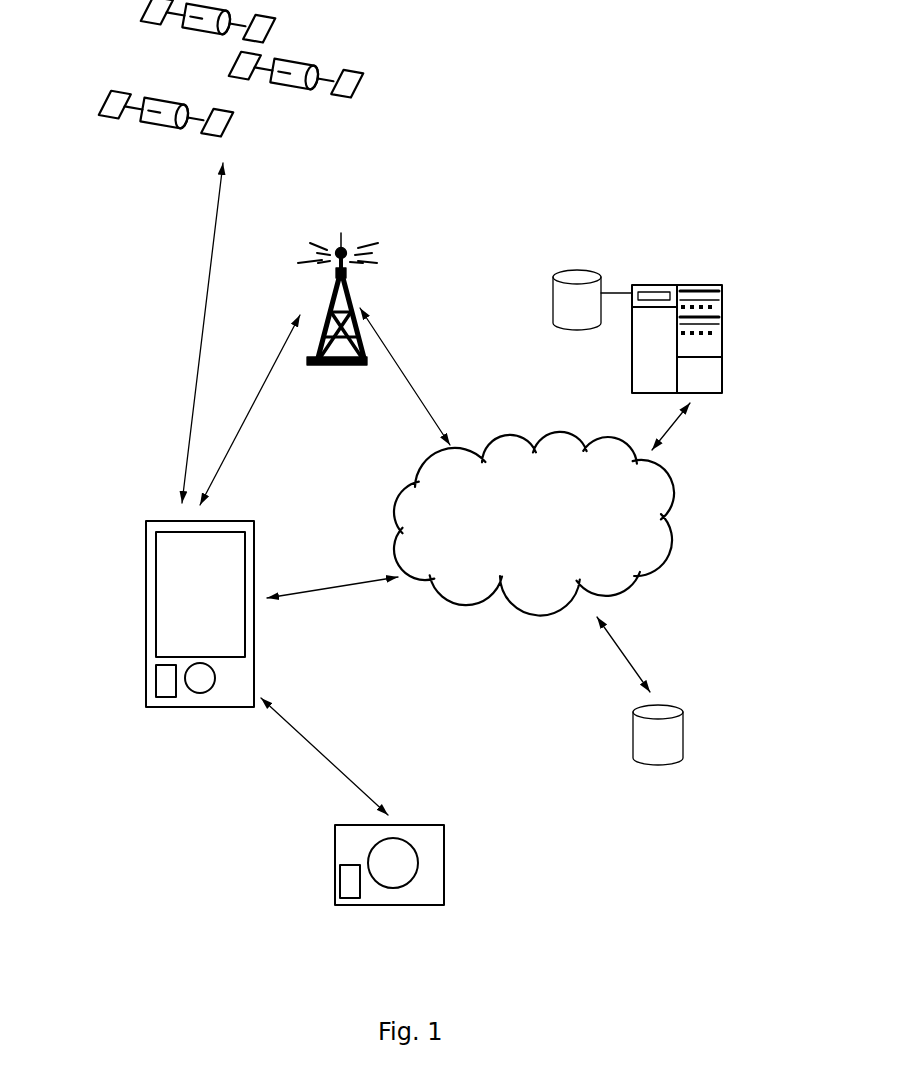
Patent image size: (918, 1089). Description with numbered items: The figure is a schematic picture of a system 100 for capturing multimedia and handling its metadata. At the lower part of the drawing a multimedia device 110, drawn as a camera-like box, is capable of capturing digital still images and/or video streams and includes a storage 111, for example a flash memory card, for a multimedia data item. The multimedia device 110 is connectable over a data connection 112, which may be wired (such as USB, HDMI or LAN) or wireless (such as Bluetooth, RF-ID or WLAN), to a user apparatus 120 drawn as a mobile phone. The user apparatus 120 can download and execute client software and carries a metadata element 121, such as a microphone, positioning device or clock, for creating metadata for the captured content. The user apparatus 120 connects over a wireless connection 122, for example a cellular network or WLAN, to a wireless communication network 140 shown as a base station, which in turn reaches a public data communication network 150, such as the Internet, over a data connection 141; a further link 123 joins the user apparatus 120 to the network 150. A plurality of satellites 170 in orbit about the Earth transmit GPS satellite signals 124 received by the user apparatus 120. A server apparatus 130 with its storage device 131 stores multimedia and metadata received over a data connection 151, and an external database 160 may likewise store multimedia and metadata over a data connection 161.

The system 100 is at (658, 138).
The multimedia device 110 is at (444, 870).
The storage 111 is at (350, 880).
The data connection 112 is at (320, 755).
The user apparatus 120 is at (255, 648).
The metadata element 121 is at (166, 680).
The wireless connection 122 is at (230, 470).
The network communication link 123 is at (323, 588).
The GPS satellite signals 124 is at (200, 326).
The server apparatus 130 is at (632, 367).
The storage device 131 is at (553, 300).
The wireless communication network 140 is at (330, 288).
The data connection 141 is at (414, 401).
The public data communication network 150 is at (655, 556).
The data connection 151 is at (675, 430).
The external database 160 is at (655, 767).
The data connection 161 is at (617, 655).
The satellites 170 is at (372, 80).